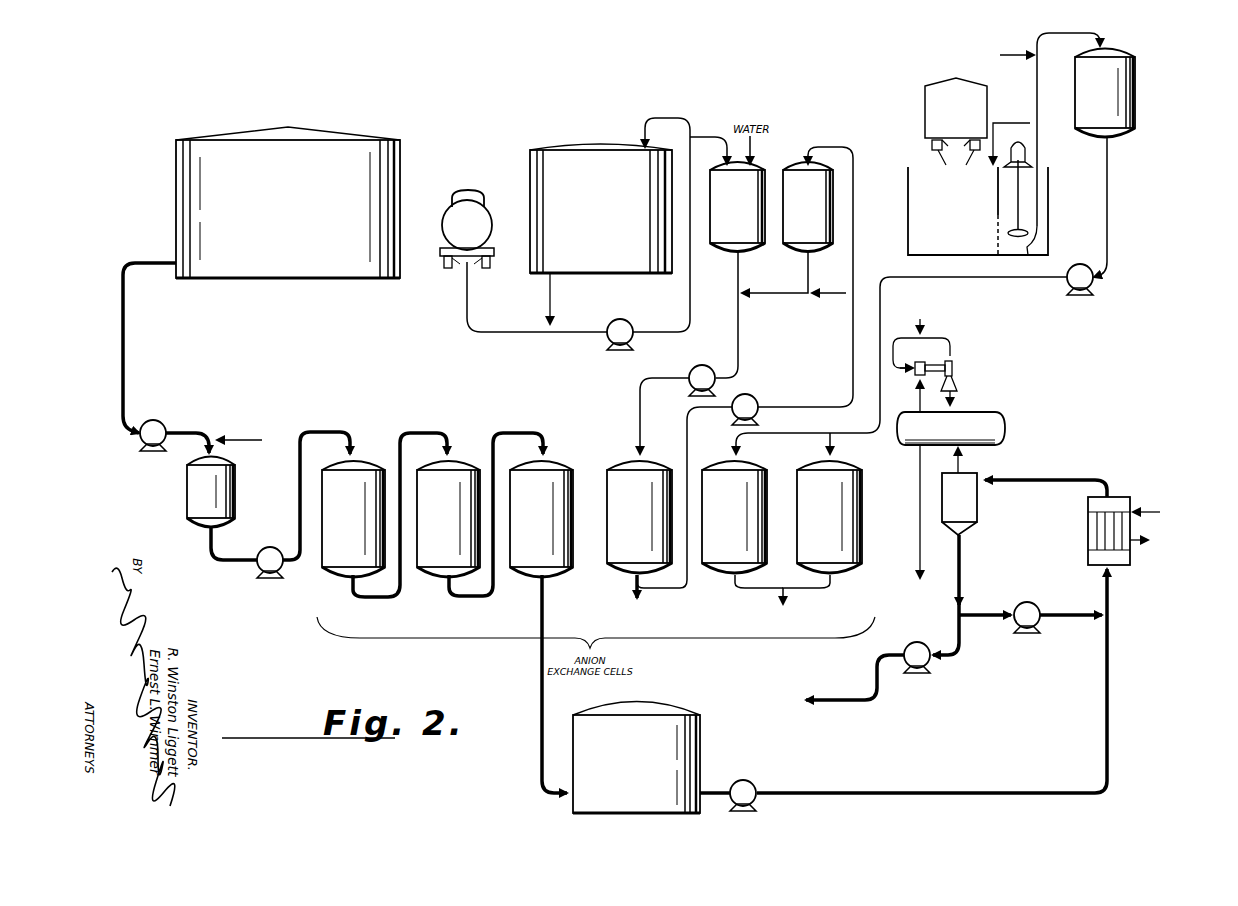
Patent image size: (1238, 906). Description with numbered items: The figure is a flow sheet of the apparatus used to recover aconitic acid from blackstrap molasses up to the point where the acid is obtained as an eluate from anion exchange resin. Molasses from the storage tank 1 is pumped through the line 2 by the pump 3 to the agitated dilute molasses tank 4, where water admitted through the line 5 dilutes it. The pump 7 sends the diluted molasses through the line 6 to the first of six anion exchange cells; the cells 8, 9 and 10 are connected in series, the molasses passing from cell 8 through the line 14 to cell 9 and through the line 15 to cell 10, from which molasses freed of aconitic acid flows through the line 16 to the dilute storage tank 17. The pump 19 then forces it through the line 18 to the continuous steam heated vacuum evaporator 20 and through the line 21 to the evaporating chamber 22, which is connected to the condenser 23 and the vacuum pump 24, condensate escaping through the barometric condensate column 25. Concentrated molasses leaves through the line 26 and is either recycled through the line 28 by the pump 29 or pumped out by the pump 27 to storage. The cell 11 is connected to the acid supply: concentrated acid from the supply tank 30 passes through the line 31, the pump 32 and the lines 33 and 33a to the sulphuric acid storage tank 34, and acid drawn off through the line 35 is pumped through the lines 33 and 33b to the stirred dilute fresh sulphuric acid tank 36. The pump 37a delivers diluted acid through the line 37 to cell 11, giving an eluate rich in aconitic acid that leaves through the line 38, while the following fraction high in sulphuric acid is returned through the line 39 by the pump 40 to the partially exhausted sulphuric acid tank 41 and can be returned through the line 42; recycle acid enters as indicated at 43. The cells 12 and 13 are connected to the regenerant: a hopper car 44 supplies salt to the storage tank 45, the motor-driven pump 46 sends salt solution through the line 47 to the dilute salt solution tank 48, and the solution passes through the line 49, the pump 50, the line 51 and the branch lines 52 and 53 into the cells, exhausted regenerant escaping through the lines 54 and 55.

The storage tank 1 is at (288, 202).
The line 2 is at (125, 348).
The pump 3 is at (160, 422).
The dilute molasses tank 4 is at (179, 492).
The line 5 is at (222, 439).
The line 6 is at (244, 562).
The pump 7 is at (275, 546).
The anion exchange cell 8 is at (353, 519).
The anion exchange cell 9 is at (448, 519).
The anion exchange cell 10 is at (541, 519).
The anion exchange cell 11 is at (639, 517).
The anion exchange cell 12 is at (734, 517).
The anion exchange cell 13 is at (829, 517).
The line 14 is at (433, 428).
The line 15 is at (518, 428).
The line 16 is at (540, 702).
The dilute storage tank 17 is at (636, 758).
The line 18 is at (789, 792).
The pump 19 is at (746, 780).
The continuous steam heated vacuum evaporator 20 is at (1116, 505).
The line 21 is at (1043, 479).
The evaporating chamber 22 is at (991, 504).
The condenser 23 is at (958, 431).
The vacuum pump 24 is at (937, 363).
The barometric condensate column 25 is at (918, 517).
The line 26 is at (963, 581).
The pump 27 is at (919, 642).
The line 28 is at (982, 620).
The pump 29 is at (1028, 604).
The supply tank 30 is at (486, 220).
The line 31 is at (465, 309).
The pump 32 is at (614, 320).
The line 33 is at (689, 289).
The line 33a is at (660, 117).
The line 33b is at (706, 137).
The sulphuric acid storage tank 34 is at (601, 208).
The line 35 is at (548, 303).
The dilute fresh sulphuric acid tank 36 is at (730, 252).
The line 37 is at (736, 312).
The pump 37a is at (710, 362).
The line 38 is at (632, 580).
The line 39 is at (665, 589).
The pump 40 is at (752, 396).
The partially exhausted sulphuric acid tank 41 is at (800, 168).
The line 42 is at (760, 292).
The recycle acid line 43 is at (820, 292).
The hopper car 44 is at (933, 126).
The storage tank 45 is at (978, 183).
The motor-driven pump 46 is at (1030, 256).
The line 47 is at (1040, 158).
The dilute salt solution tank 48 is at (1151, 93).
The line 49 is at (1109, 190).
The pump 50 is at (1074, 266).
The line 51 is at (886, 284).
The branch line 52 is at (742, 447).
The branch line 53 is at (836, 444).
The line 54 is at (733, 585).
The line 55 is at (830, 586).